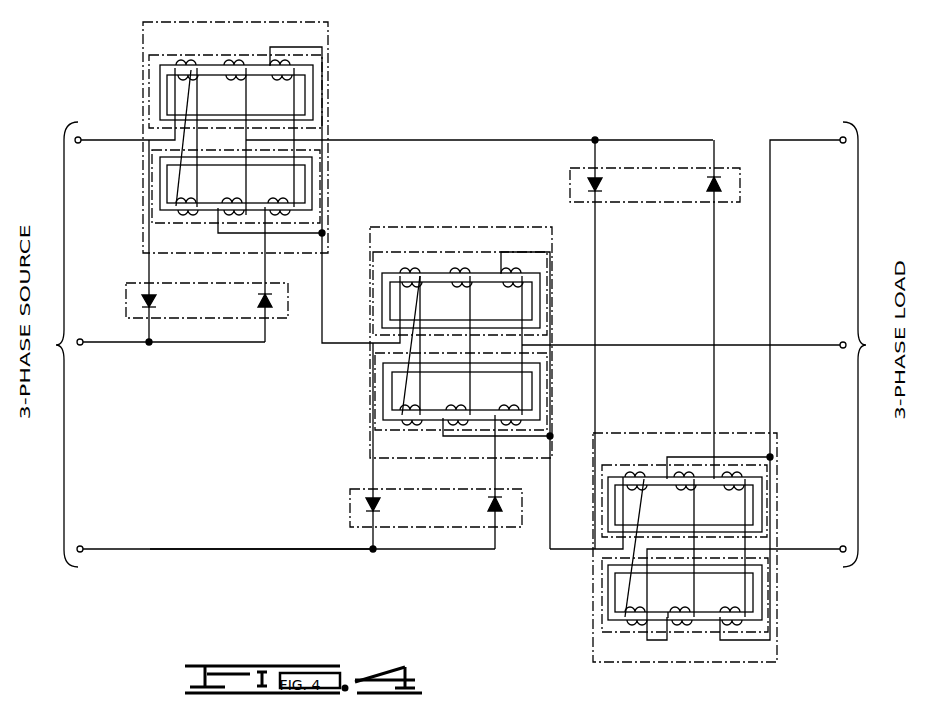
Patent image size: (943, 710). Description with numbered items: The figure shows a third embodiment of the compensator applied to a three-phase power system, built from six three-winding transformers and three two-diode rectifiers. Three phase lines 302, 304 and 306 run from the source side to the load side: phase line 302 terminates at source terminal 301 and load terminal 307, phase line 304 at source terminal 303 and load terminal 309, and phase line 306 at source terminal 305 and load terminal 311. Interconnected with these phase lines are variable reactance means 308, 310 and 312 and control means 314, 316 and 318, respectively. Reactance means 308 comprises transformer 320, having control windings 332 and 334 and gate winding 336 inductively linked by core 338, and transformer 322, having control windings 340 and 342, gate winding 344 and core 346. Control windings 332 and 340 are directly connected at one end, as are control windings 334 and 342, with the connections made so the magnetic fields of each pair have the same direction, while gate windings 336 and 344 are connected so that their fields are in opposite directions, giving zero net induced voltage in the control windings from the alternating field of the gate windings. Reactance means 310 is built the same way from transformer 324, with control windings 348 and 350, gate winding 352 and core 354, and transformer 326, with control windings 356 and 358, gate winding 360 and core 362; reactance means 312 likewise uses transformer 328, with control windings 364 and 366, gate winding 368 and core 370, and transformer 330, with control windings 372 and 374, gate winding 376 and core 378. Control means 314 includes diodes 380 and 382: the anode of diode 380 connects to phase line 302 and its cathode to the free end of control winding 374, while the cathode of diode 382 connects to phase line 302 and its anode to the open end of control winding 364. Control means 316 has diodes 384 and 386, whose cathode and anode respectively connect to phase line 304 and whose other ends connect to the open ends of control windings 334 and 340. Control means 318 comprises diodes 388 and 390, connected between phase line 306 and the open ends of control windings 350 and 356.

The terminal 301 is at (122, 118).
The phase line 302 is at (437, 143).
The terminal 303 is at (168, 355).
The phase line 304 is at (633, 347).
The terminal 305 is at (283, 541).
The phase line 306 is at (255, 548).
The terminal 307 is at (786, 388).
The variable reactance means 308 is at (330, 78).
The terminal 309 is at (838, 357).
The variable reactance means 310 is at (370, 405).
The terminal 311 is at (702, 558).
The variable reactance means 312 is at (600, 612).
The control means 314 is at (724, 168).
The control means 316 is at (178, 320).
The control means 318 is at (350, 490).
The three-winding transformer 320 is at (323, 50).
The three-winding transformer 322 is at (328, 211).
The three-winding transformer 324 is at (373, 300).
The three-winding transformer 326 is at (375, 388).
The three-winding transformer 328 is at (640, 465).
The three-winding transformer 330 is at (605, 578).
The control winding 332 is at (278, 80).
The control winding 334 is at (233, 60).
The gate winding 336 is at (172, 62).
The core 338 is at (230, 80).
The control winding 340 is at (286, 202).
The control winding 342 is at (246, 216).
The gate winding 344 is at (197, 219).
The core 346 is at (206, 166).
The control winding 348 is at (508, 283).
The control winding 350 is at (470, 270).
The gate winding 352 is at (420, 264).
The core 354 is at (432, 317).
The control winding 356 is at (514, 403).
The control winding 358 is at (468, 437).
The gate winding 360 is at (421, 431).
The core 362 is at (429, 377).
The control winding 364 is at (730, 488).
The control winding 366 is at (700, 476).
The gate winding 368 is at (643, 476).
The core 370 is at (651, 497).
The control winding 372 is at (713, 632).
The control winding 374 is at (690, 628).
The gate winding 376 is at (646, 628).
The core 378 is at (651, 579).
The diode 380 is at (604, 185).
The diode 382 is at (706, 186).
The diode 384 is at (156, 301).
The diode 386 is at (258, 301).
The diode 388 is at (380, 505).
The diode 390 is at (487, 508).